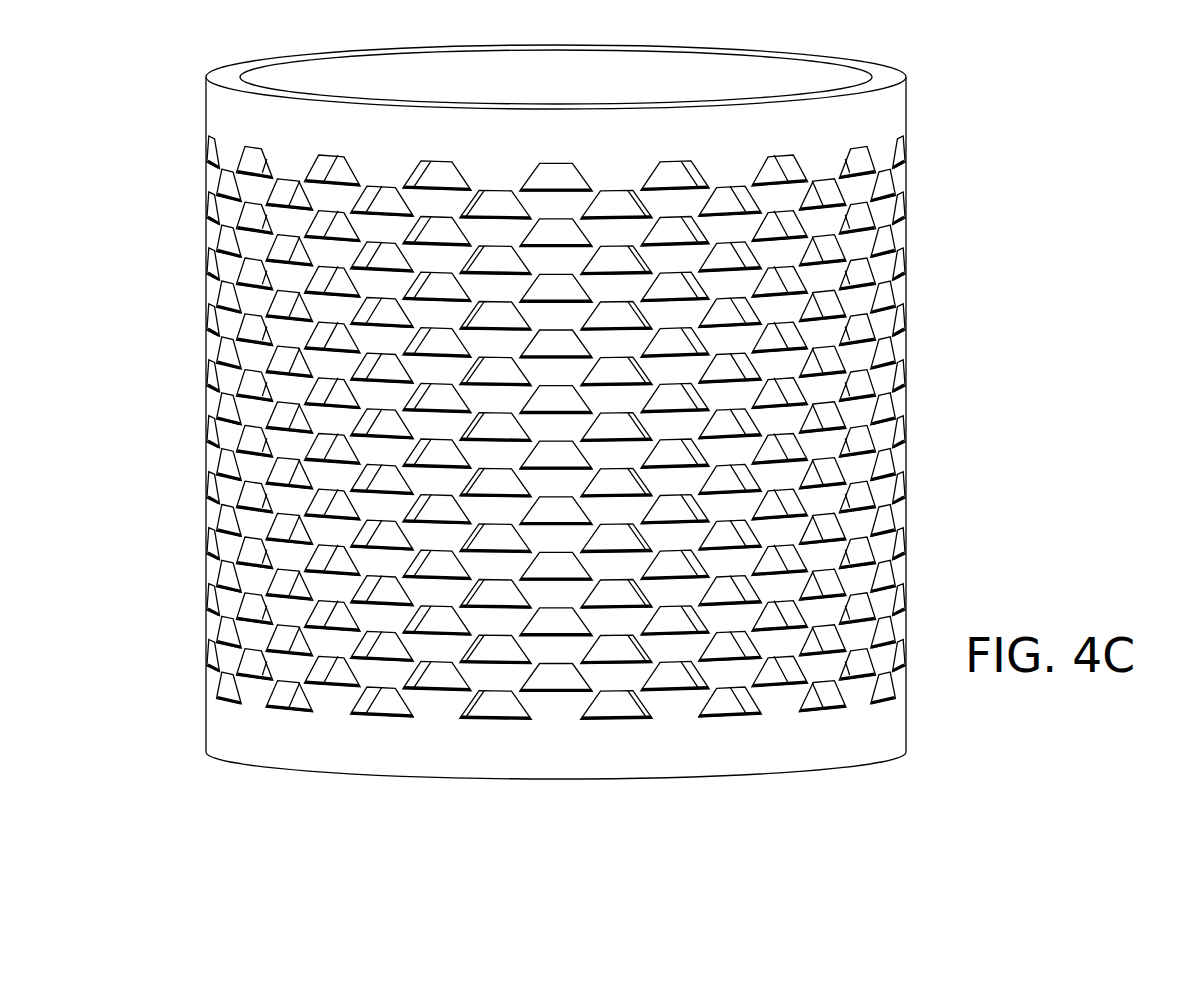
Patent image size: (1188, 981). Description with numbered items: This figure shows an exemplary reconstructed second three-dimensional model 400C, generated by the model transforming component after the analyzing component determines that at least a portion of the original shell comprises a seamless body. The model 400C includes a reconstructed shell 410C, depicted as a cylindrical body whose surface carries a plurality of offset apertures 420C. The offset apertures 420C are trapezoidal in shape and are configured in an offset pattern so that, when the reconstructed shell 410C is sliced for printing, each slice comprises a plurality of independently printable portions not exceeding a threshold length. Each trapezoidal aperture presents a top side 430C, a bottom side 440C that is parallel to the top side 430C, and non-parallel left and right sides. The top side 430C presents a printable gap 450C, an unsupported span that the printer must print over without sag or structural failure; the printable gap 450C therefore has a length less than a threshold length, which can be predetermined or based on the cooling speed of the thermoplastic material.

The second 3D model 400C is at (92, 108).
The reconstructed shell 410C is at (892, 55).
The offset apertures 420C is at (870, 240).
The top side 430C is at (603, 682).
The bottom side 440C is at (642, 733).
The printable gap 450C is at (610, 711).